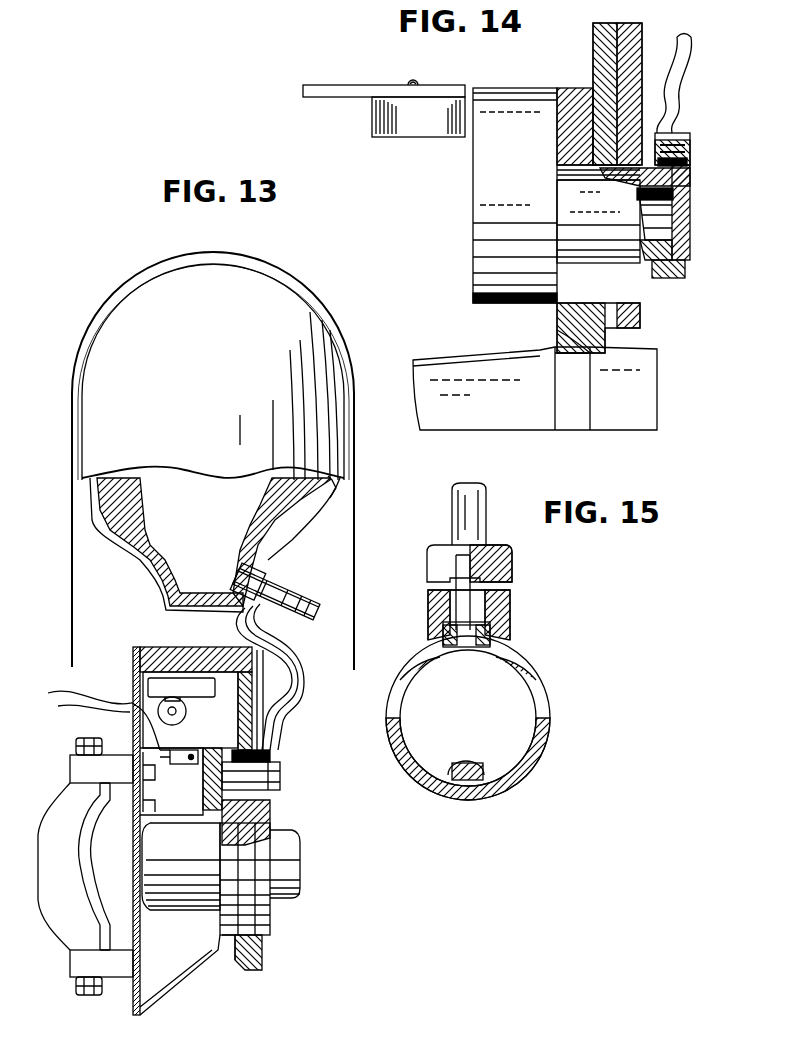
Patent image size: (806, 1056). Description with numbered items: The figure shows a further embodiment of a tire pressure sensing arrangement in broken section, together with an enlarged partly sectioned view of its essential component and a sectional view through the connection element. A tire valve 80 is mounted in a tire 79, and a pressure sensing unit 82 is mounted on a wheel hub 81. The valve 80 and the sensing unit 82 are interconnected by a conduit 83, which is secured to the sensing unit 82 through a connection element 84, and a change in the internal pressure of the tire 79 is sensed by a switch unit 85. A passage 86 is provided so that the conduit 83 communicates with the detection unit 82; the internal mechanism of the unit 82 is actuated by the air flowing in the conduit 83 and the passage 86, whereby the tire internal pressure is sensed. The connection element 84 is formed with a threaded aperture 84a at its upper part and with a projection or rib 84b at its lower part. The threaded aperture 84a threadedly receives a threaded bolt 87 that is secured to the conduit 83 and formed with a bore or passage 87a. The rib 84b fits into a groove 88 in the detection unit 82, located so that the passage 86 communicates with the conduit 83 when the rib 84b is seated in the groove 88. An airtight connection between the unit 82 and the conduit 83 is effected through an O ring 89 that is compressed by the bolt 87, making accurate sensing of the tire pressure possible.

In FIG. 13, the tire 79 is at (318, 297).
In FIG. 13, the tire valve 80 is at (266, 582).
In FIG. 13, the wheel hub 81 is at (300, 848).
In FIG. 14, the wheel hub 81 is at (650, 374).
In FIG. 13, the pressure sensing unit 82 is at (281, 776).
In FIG. 14, the pressure sensing unit 82 is at (641, 290).
In FIG. 13, the conduit 83 is at (276, 702).
In FIG. 14, the conduit 83 is at (693, 52).
In FIG. 15, the conduit 83 is at (476, 514).
In FIG. 13, the connection element 84 is at (270, 752).
In FIG. 14, the connection element 84 is at (690, 150).
In FIG. 15, the connection element 84 is at (550, 692).
In FIG. 14, the threaded aperture 84a is at (688, 134).
In FIG. 15, the threaded aperture 84a is at (503, 607).
In FIG. 14, the rib 84b is at (690, 243).
In FIG. 15, the rib 84b is at (480, 780).
In FIG. 13, the switch unit 85 is at (183, 764).
In FIG. 14, the switch unit 85 is at (418, 138).
In FIG. 14, the passage 86 is at (672, 180).
In FIG. 15, the threaded bolt 87 is at (505, 558).
In FIG. 15, the bore 87a is at (470, 590).
In FIG. 14, the groove 88 is at (686, 271).
In FIG. 14, the O ring 89 is at (688, 163).
In FIG. 15, the O ring 89 is at (493, 640).